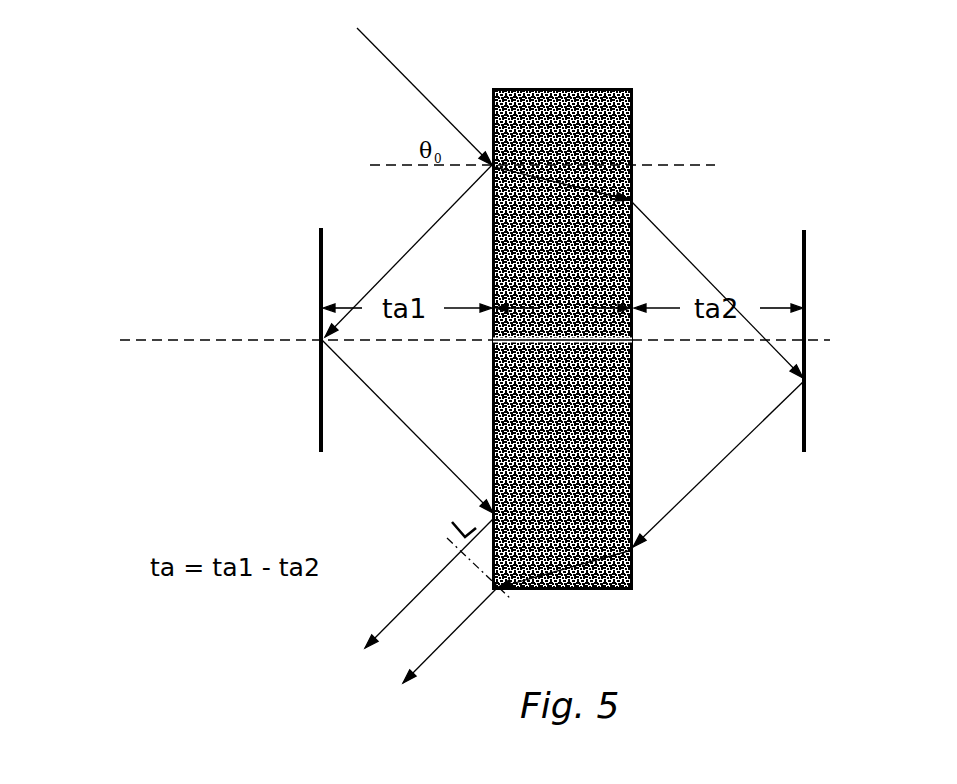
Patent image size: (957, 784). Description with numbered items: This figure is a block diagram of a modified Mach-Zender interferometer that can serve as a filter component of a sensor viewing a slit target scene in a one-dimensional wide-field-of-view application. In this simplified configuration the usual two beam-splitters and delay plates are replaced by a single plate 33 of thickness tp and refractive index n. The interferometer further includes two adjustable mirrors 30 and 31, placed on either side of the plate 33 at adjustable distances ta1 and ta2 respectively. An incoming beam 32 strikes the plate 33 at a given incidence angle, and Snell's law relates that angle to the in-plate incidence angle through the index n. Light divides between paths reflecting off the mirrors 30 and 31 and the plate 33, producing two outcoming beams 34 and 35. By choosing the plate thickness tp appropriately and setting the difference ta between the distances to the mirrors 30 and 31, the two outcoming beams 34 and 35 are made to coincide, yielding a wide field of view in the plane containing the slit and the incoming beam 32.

The adjustable mirror 30 is at (311, 248).
The adjustable mirror 31 is at (817, 292).
The incoming beam 32 is at (413, 70).
The plate 33 is at (641, 444).
The outcoming beam 34 is at (394, 603).
The outcoming beam 35 is at (448, 652).